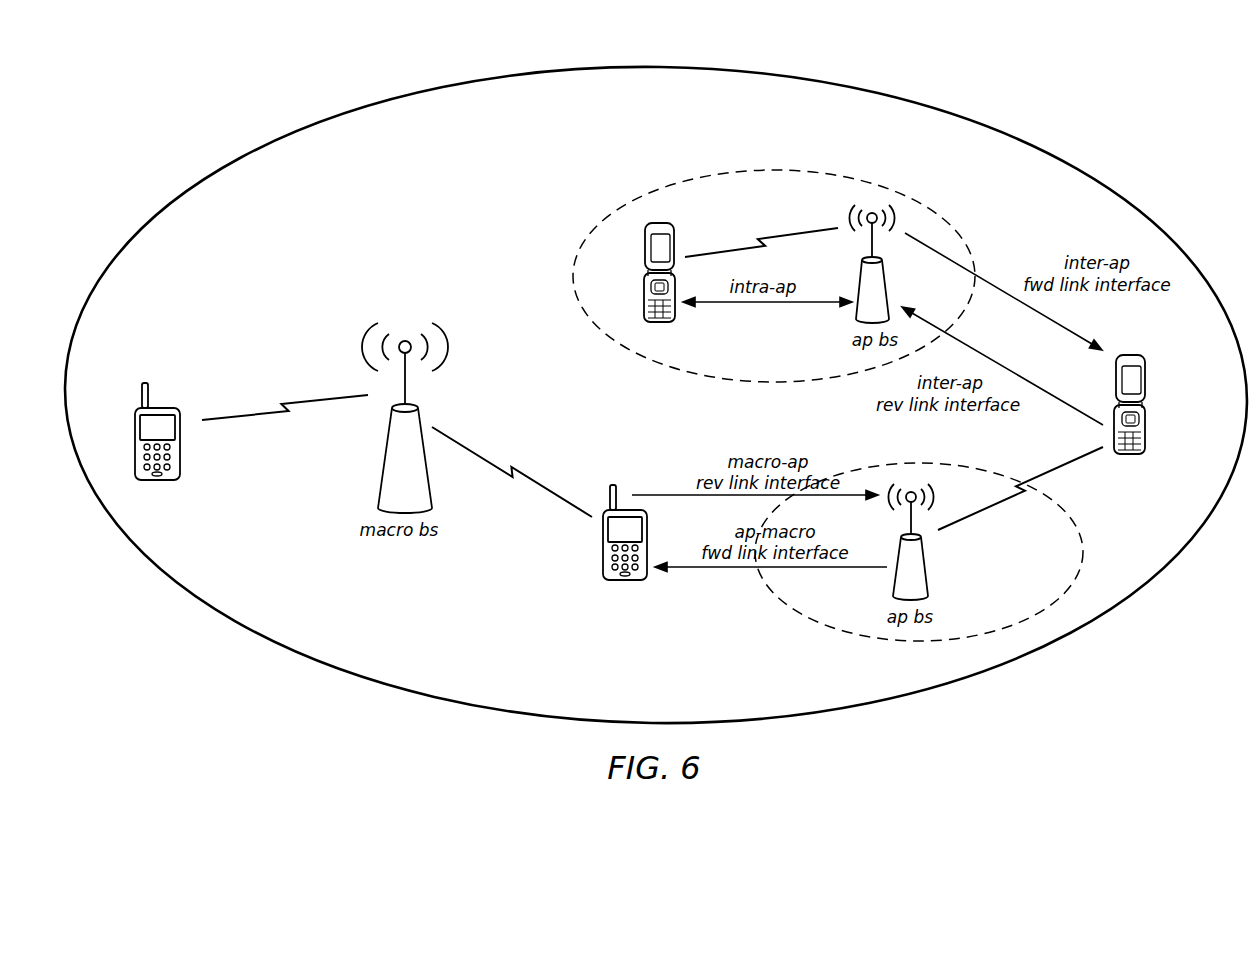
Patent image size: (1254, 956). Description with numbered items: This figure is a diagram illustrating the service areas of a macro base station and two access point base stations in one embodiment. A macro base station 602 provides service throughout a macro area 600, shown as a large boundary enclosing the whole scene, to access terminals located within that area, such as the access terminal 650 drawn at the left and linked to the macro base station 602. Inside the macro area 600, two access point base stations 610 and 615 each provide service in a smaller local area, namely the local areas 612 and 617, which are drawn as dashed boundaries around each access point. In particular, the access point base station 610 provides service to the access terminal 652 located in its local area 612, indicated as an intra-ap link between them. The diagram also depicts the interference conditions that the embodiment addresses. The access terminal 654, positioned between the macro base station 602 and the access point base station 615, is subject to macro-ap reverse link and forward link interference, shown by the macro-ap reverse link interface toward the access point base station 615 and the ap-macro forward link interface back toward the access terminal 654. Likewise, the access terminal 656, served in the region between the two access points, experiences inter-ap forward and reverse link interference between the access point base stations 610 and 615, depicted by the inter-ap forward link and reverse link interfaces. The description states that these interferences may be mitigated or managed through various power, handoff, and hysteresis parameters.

The macro area 600 is at (1003, 97).
The macro base station 602 is at (406, 341).
The access point base station 610 is at (872, 213).
The local area 612 is at (748, 163).
The access point base station 615 is at (911, 492).
The local area 617 is at (1090, 560).
The access terminal 650 is at (167, 407).
The access terminal 652 is at (657, 222).
The access terminal 654 is at (615, 484).
The access terminal 656 is at (1131, 354).